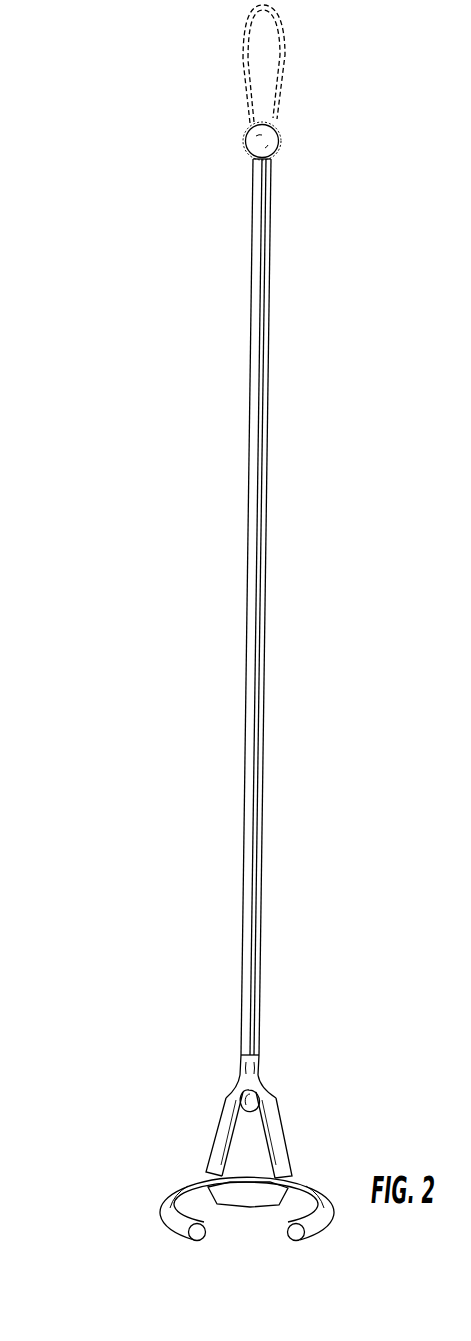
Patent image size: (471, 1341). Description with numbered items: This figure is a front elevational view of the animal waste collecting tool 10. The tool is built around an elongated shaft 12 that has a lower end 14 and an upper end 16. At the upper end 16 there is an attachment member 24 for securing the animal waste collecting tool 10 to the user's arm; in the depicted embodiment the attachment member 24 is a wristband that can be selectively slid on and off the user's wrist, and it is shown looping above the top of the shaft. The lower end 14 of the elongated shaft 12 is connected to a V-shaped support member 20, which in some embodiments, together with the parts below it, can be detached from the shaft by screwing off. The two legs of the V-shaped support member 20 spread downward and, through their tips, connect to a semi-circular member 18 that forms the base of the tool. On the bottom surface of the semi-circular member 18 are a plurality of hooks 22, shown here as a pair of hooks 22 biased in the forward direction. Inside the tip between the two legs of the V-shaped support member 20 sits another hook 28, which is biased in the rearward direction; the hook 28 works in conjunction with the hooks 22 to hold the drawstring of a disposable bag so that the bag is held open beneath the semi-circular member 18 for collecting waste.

The animal waste collecting tool 10 is at (132, 462).
The elongated shaft 12 is at (265, 655).
The lower end 14 is at (260, 1052).
The upper end 16 is at (280, 146).
The semi-circular member 18 is at (167, 1190).
The V-shaped support member 20 is at (277, 1098).
The hooks 22 is at (248, 1209).
The attachment member 24 is at (284, 82).
The hook 28 is at (232, 1106).